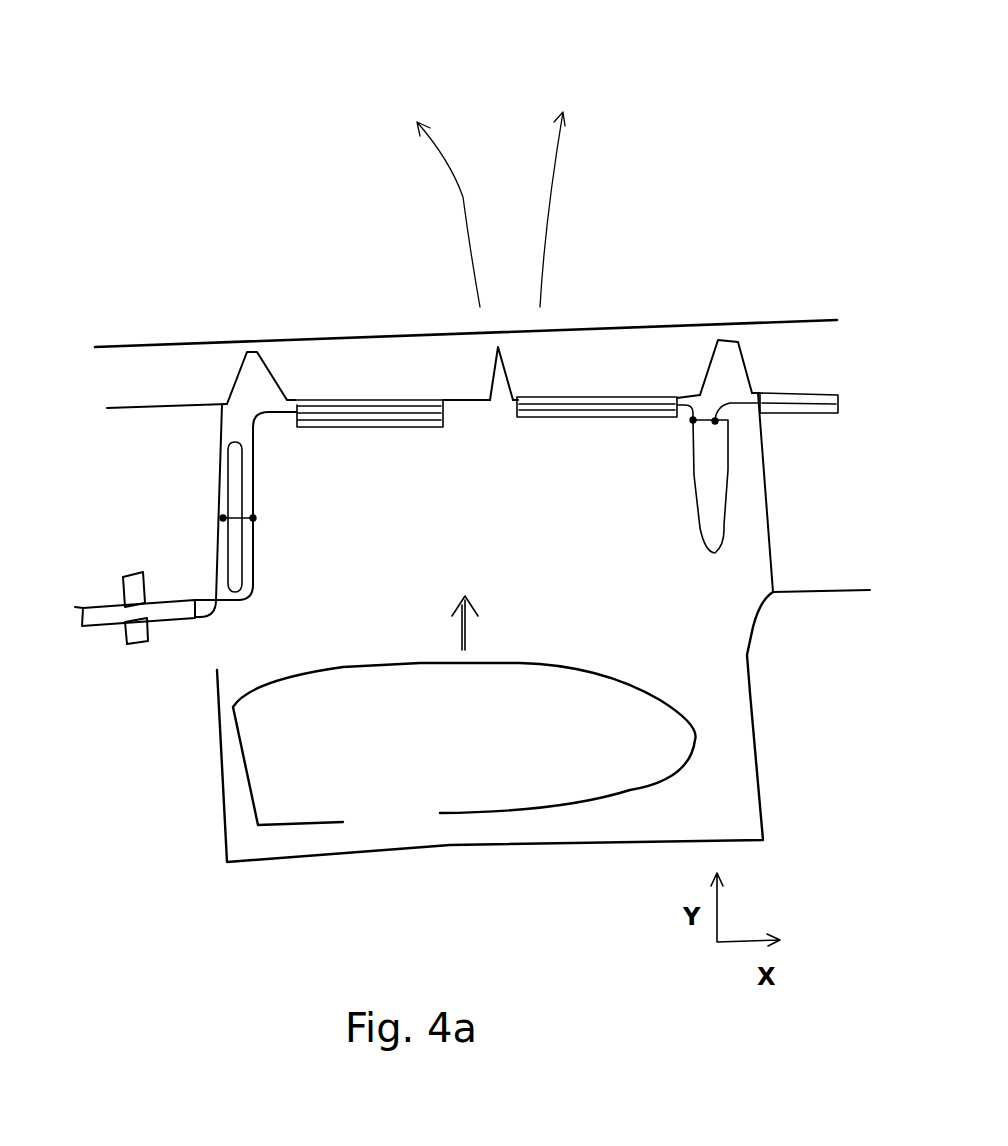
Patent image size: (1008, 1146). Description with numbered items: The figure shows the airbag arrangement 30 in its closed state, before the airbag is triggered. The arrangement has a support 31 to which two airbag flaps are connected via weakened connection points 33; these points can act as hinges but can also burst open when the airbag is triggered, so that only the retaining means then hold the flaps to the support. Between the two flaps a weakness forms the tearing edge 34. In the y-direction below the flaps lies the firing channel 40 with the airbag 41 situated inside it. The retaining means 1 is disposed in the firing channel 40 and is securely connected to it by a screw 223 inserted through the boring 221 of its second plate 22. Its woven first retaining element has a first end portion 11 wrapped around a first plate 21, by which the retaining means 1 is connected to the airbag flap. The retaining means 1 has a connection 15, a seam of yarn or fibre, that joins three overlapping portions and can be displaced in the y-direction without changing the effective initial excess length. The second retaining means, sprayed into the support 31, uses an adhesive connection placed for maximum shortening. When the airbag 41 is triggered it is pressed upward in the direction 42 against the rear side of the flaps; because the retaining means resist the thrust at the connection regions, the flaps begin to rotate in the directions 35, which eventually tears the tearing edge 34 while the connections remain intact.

The retaining means 1 is at (295, 502).
The first end portion 11 is at (606, 442).
The connection 15 is at (275, 539).
The first plate 21 is at (380, 428).
The second plate 22 is at (167, 620).
The boring 221 is at (121, 642).
The screw 223 is at (105, 568).
The airbag arrangement 30 is at (225, 145).
The support 31 is at (132, 343).
The weakened connection point 33 is at (244, 331).
The tearing edge 34 is at (495, 330).
The direction 35 is at (445, 148).
The firing channel 40 is at (666, 630).
The airbag 41 is at (490, 815).
The direction 42 is at (466, 628).